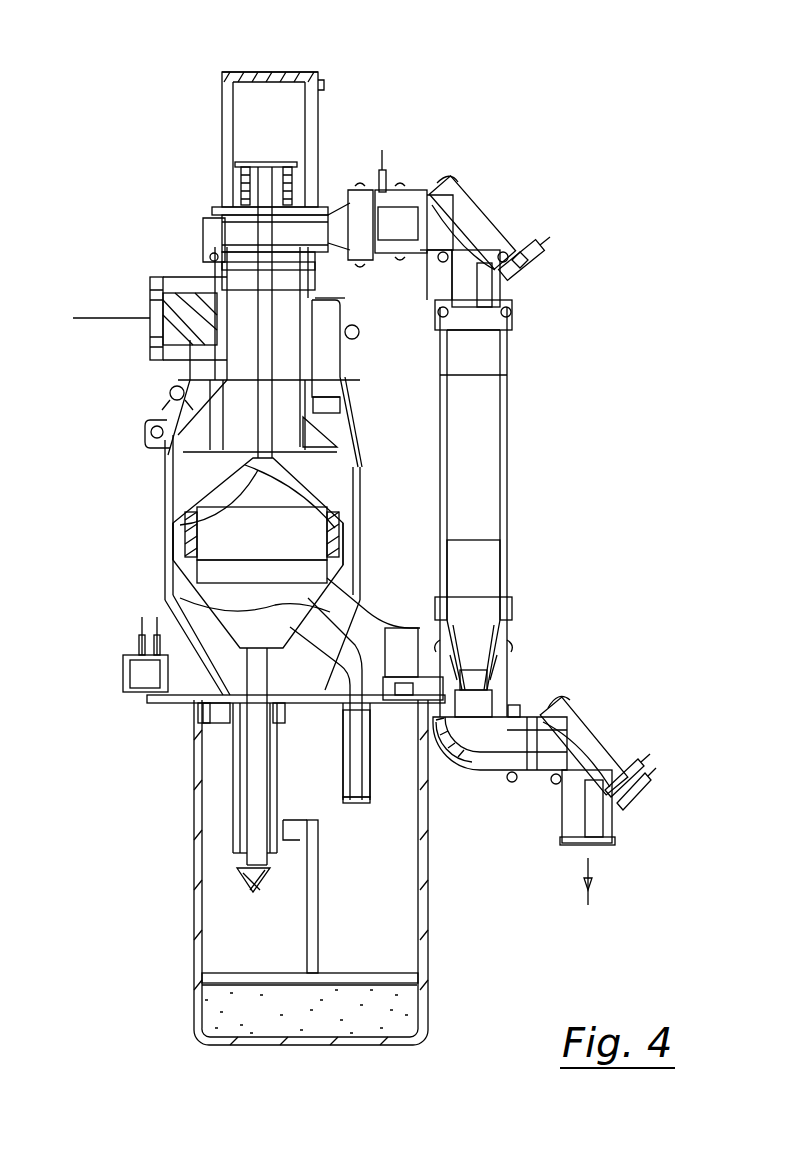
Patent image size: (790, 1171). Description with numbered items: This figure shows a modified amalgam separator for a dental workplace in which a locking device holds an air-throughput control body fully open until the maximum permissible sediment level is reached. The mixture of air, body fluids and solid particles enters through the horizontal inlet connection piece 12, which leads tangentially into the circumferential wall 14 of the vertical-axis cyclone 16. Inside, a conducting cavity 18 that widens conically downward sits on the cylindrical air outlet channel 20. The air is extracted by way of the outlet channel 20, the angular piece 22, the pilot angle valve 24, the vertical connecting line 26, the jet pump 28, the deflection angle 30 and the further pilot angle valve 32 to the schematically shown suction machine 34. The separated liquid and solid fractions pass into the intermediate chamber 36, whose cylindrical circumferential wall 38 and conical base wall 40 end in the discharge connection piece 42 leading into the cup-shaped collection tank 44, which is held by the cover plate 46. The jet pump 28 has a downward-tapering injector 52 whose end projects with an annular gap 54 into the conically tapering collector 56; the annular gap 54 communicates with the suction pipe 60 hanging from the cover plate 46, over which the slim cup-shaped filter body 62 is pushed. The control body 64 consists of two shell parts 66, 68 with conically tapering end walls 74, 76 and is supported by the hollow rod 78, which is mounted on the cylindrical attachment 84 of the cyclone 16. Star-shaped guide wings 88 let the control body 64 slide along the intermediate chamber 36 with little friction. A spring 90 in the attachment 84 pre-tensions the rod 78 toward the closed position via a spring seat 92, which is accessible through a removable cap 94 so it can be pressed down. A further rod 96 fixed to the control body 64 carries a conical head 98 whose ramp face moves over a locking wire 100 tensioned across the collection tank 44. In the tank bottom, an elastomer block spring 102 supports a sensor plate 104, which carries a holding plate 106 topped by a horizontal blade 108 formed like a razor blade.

The inlet connection piece 12 is at (183, 310).
The circumferential wall 14 is at (358, 350).
The cyclone 16 is at (345, 385).
The conducting cavity 18 is at (340, 415).
The air outlet channel 20 is at (168, 425).
The angular piece 22 is at (220, 258).
The pilot angle valve 24 is at (487, 223).
The vertical connecting line 26 is at (500, 398).
The jet pump 28 is at (468, 653).
The deflection angle 30 is at (513, 747).
The further pilot angle valve 32 is at (597, 743).
The suction machine 34 is at (580, 903).
The intermediate chamber 36 is at (360, 485).
The cylindrical circumferential wall 38 is at (360, 510).
The conical base wall 40 is at (140, 640).
The discharge connection piece 42 is at (237, 773).
The collection tank 44 is at (193, 800).
The cover plate 46 is at (260, 745).
The injector 52 is at (497, 633).
The annular gap 54 is at (500, 662).
The collector 56 is at (470, 730).
The suction pipe 60 is at (370, 743).
The filter body 62 is at (370, 790).
The control body 64 is at (275, 552).
The shell part 66 is at (192, 525).
The shell part 68 is at (185, 558).
The end wall 74 is at (265, 460).
The end wall 76 is at (215, 600).
The hollow rod 78 is at (267, 340).
The cylindrical attachment 84 is at (225, 143).
The guide wings 88 is at (330, 537).
The spring 90 is at (240, 192).
The spring seat 92 is at (265, 162).
The removable cap 94 is at (300, 72).
The further rod 96 is at (125, 685).
The conical head 98 is at (237, 872).
The locking wire 100 is at (266, 860).
The elastomer block spring 102 is at (215, 1018).
The sensor plate 104 is at (270, 985).
The holding plate 106 is at (300, 958).
The horizontal blade 108 is at (320, 868).